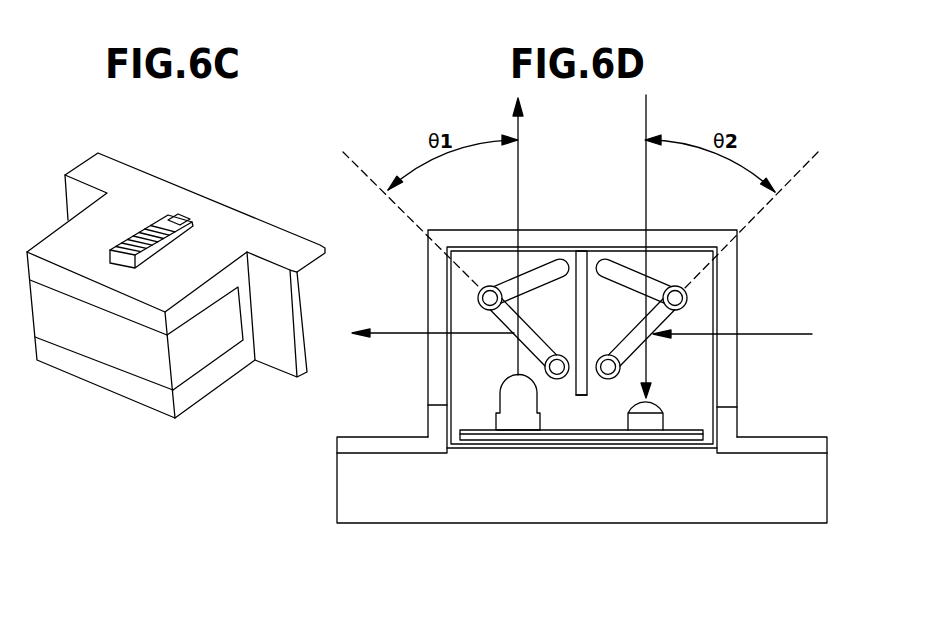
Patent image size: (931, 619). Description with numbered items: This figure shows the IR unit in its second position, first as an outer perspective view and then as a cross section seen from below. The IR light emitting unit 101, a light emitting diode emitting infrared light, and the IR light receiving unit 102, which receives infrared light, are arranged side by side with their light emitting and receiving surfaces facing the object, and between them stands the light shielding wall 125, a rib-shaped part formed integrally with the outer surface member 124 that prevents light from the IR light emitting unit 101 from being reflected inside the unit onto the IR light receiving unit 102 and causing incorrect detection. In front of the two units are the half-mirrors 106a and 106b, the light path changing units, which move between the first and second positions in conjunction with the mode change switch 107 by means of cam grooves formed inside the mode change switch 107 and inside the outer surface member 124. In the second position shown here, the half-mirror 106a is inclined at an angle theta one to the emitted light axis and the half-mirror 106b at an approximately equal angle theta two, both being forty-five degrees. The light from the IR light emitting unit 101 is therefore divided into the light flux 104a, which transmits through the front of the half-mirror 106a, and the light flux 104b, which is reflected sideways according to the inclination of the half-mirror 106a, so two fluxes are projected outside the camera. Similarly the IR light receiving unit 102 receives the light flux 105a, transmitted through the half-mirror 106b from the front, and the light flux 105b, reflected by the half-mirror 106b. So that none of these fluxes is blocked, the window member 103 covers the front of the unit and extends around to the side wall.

In FIG. 6D, the IR light emitting unit 101 is at (518, 422).
In FIG. 6D, the IR light receiving unit 102 is at (647, 427).
In FIG. 6C, the window member 103 is at (97, 342).
In FIG. 6D, the window member 103 is at (582, 246).
In FIG. 6D, the light flux 104a is at (517, 197).
In FIG. 6D, the light flux 104b is at (385, 337).
In FIG. 6D, the light flux 105a is at (647, 197).
In FIG. 6D, the light flux 105b is at (772, 332).
In FIG. 6D, the half-mirror 106a is at (480, 302).
In FIG. 6D, the half-mirror 106b is at (696, 292).
In FIG. 6C, the mode change switch 107 is at (147, 217).
In FIG. 6D, the mode change switch 107 is at (687, 378).
In FIG. 6C, the outer surface member 124 is at (90, 168).
In FIG. 6D, the outer surface member 124 is at (768, 524).
In FIG. 6D, the light shielding wall 125 is at (580, 396).